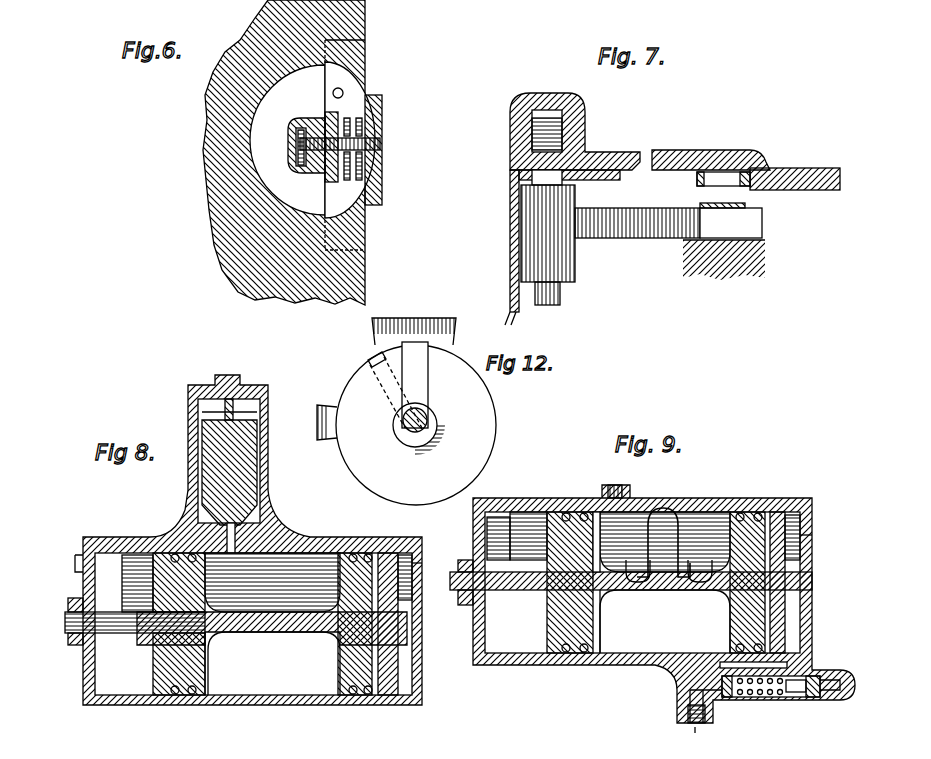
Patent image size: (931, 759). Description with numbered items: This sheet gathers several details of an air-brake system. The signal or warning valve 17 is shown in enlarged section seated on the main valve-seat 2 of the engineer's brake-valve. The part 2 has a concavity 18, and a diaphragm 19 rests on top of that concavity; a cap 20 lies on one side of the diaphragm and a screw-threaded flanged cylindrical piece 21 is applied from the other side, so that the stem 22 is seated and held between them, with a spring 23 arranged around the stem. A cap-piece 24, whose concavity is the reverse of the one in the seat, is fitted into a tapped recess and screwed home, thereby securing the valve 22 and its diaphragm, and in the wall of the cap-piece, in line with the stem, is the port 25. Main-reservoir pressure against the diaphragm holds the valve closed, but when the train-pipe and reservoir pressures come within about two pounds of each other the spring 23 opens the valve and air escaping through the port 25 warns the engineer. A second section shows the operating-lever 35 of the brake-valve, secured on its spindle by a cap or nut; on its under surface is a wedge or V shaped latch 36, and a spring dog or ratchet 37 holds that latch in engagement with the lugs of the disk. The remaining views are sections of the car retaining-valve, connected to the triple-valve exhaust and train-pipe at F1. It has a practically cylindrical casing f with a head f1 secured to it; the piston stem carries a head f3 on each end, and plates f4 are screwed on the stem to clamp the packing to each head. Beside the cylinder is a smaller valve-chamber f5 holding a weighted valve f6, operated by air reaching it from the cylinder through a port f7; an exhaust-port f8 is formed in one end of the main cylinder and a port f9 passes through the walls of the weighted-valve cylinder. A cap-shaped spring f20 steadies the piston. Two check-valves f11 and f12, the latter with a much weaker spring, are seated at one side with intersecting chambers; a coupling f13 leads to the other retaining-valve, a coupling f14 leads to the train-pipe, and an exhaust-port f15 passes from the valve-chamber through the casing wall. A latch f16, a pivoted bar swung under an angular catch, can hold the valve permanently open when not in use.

In FIG. 6, the main valve-seat 2 is at (365, 27).
In FIG. 6, the signal-valve 17 is at (382, 126).
In FIG. 6, the concavity 18 is at (287, 140).
In FIG. 6, the diaphragm 19 is at (324, 208).
In FIG. 6, the cap 20 is at (308, 173).
In FIG. 6, the screw-threaded flanged cylindrical piece 21 is at (350, 140).
In FIG. 6, the stem 22 is at (296, 146).
In FIG. 6, the spring 23 is at (344, 118).
In FIG. 7, the spring 23 is at (627, 220).
In FIG. 6, the cap-piece 24 is at (382, 186).
In FIG. 6, the port 25 is at (382, 147).
In FIG. 7, the operating-lever 35 is at (711, 143).
In FIG. 7, the wedge or V shaped latch 36 is at (697, 178).
In FIG. 7, the spring dog or ratchet 37 is at (770, 170).
In FIG. 8, the cylindrical casing f is at (290, 706).
In FIG. 9, the cylindrical casing f is at (605, 668).
In FIG. 8, the head f1 is at (131, 636).
In FIG. 9, the head f1 is at (459, 627).
In FIG. 8, the head f3 is at (160, 553).
In FIG. 9, the head f3 is at (560, 520).
In FIG. 8, the plates f4 is at (392, 553).
In FIG. 9, the plates f4 is at (782, 512).
In FIG. 8, the valve-chamber f5 is at (198, 405).
In FIG. 8, the weighted valve f6 is at (208, 645).
In FIG. 9, the weighted valve f6 is at (600, 628).
In FIG. 8, the port f7 is at (250, 530).
In FIG. 8, the exhaust-port f8 is at (423, 563).
In FIG. 9, the exhaust-port f8 is at (812, 536).
In FIG. 8, the port f9 is at (262, 470).
In FIG. 8, the check-valve f11 is at (253, 624).
In FIG. 9, the check-valve f11 is at (631, 582).
In FIG. 9, the check-valve f12 is at (760, 700).
In FIG. 12, the coupling f13 is at (328, 410).
In FIG. 9, the coupling f13 is at (628, 485).
In FIG. 9, the coupling f14 is at (699, 717).
In FIG. 9, the exhaust-port f15 is at (712, 510).
In FIG. 12, the latch f16 is at (428, 378).
In FIG. 9, the spring f20 is at (663, 506).
In FIG. 8, the connection to exhaust-port and train-pipe F1 is at (324, 522).
In FIG. 9, the connection to exhaust-port and train-pipe F1 is at (514, 481).